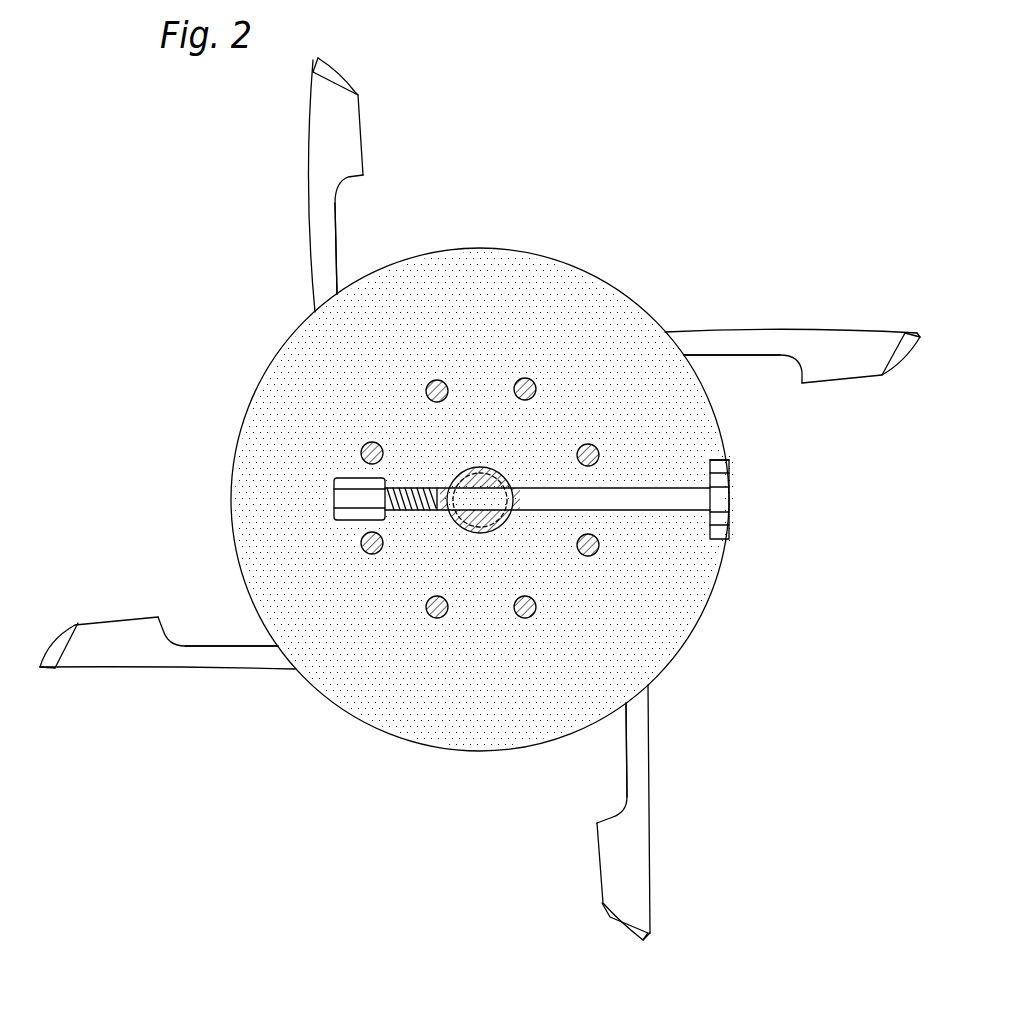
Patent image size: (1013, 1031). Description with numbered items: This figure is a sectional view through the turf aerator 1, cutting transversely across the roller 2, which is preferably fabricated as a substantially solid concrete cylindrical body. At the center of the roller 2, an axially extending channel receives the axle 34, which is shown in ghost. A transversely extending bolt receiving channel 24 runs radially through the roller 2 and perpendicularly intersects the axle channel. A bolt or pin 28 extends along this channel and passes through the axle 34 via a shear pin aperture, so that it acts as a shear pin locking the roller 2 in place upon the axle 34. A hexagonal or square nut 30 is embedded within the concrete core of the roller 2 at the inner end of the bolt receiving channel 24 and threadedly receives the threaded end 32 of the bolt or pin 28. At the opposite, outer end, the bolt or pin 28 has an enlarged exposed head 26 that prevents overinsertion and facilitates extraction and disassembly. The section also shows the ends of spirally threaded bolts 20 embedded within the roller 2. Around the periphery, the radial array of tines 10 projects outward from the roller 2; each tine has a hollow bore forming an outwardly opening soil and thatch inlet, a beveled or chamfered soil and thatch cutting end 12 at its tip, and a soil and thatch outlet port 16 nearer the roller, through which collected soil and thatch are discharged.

The turf aerator 1 is at (298, 727).
The roller 2 is at (642, 310).
The tines 10 is at (343, 130).
The soil and thatch cutting end 12 is at (340, 80).
The soil and thatch outlet port 16 is at (345, 216).
The spirally threaded bolts 20 is at (430, 617).
The bolt receiving channel 24 is at (723, 529).
The head 26 is at (723, 479).
The bolt or pin 28 is at (647, 500).
The nut 30 is at (350, 498).
The threaded end 32 is at (414, 488).
The axle 34 is at (483, 467).